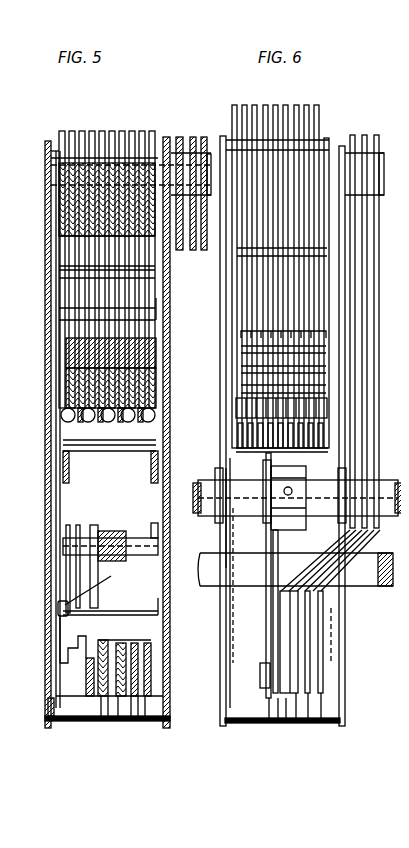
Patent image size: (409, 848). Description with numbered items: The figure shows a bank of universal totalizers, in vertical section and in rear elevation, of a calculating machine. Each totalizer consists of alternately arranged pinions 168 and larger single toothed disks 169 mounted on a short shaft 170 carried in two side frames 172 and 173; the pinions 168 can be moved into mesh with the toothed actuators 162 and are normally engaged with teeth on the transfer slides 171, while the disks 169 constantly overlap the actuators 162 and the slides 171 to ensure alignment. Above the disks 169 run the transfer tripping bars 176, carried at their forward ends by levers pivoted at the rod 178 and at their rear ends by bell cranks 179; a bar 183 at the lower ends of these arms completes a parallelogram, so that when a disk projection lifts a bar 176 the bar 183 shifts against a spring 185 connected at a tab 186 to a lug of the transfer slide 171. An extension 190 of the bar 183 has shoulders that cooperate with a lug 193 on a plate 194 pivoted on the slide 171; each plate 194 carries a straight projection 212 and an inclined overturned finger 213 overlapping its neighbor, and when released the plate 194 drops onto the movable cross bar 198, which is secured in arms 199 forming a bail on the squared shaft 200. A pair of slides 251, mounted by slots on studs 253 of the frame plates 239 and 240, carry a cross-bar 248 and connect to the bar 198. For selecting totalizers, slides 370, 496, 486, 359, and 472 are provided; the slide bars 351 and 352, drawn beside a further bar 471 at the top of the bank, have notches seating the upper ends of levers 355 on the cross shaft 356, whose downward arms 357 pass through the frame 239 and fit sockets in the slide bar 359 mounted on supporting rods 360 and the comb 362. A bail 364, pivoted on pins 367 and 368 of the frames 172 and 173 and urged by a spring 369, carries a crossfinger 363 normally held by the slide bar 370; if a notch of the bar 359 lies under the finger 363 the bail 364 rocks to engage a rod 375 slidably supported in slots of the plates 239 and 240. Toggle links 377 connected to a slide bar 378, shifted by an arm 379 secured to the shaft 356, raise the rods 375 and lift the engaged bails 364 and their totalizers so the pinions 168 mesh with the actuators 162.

In FIG. 5, the actuators 162 is at (136, 123).
In FIG. 6, the actuators 162 is at (303, 130).
In FIG. 5, the jack 471 is at (171, 128).
In FIG. 6, the jack 471 is at (357, 127).
In FIG. 5, the slide bar 351 is at (185, 128).
In FIG. 6, the slide bar 351 is at (345, 127).
In FIG. 5, the slide bar 352 is at (196, 128).
In FIG. 6, the slide bar 352 is at (367, 126).
In FIG. 5, the pivot rod 178 is at (45, 180).
In FIG. 5, the transfer tripping bars 176 is at (54, 209).
In FIG. 5, the single toothed disks 169 is at (60, 263).
In FIG. 5, the pinions 168 is at (53, 273).
In FIG. 5, the side frame 173 is at (47, 383).
In FIG. 5, the spring 185 is at (55, 409).
In FIG. 5, the tab 186 is at (55, 433).
In FIG. 5, the short shaft 170 is at (150, 302).
In FIG. 5, the transfer slides 171 is at (143, 350).
In FIG. 5, the bar 183 is at (137, 383).
In FIG. 5, the side frame 172 is at (153, 405).
In FIG. 5, the spacing plate 240 is at (40, 470).
In FIG. 6, the spacing plate 240 is at (214, 527).
In FIG. 5, the cross-bar 248 is at (85, 440).
In FIG. 5, the studs 253 is at (62, 455).
In FIG. 5, the slides 251 is at (58, 478).
In FIG. 6, the slides 251 is at (232, 470).
In FIG. 5, the rod 375 is at (130, 530).
In FIG. 5, the bail 364 is at (55, 563).
In FIG. 6, the bail 364 is at (192, 565).
In FIG. 5, the spring 369 is at (72, 573).
In FIG. 5, the toggle links 377 is at (88, 590).
In FIG. 5, the pin 368 is at (50, 602).
In FIG. 5, the crossfinger 363 is at (110, 622).
In FIG. 5, the pin 367 is at (150, 603).
In FIG. 5, the slide bar 370 is at (93, 709).
In FIG. 6, the slide bar 370 is at (267, 685).
In FIG. 5, the slide bar 378 is at (78, 689).
In FIG. 6, the slide bar 378 is at (257, 688).
In FIG. 5, the supporting rods 360 is at (50, 712).
In FIG. 5, the slide 496 is at (100, 709).
In FIG. 6, the slide 496 is at (272, 685).
In FIG. 5, the slide 486 is at (110, 709).
In FIG. 6, the slide 486 is at (278, 685).
In FIG. 5, the slide bar 359 is at (137, 709).
In FIG. 6, the slide bar 359 is at (313, 686).
In FIG. 5, the slide 472 is at (127, 709).
In FIG. 6, the slide 472 is at (300, 686).
In FIG. 6, the bell crank 179 is at (233, 288).
In FIG. 6, the lug 193 is at (238, 323).
In FIG. 6, the plate 194 is at (238, 338).
In FIG. 6, the straight projection 212 is at (240, 362).
In FIG. 6, the extension 190 is at (235, 377).
In FIG. 6, the inclined overturned finger 213 is at (233, 402).
In FIG. 6, the lever 355 is at (368, 314).
In FIG. 6, the cross shaft 356 is at (392, 470).
In FIG. 6, the cross bar 198 is at (235, 443).
In FIG. 6, the spacing plate 239 is at (213, 480).
In FIG. 6, the arm 379 is at (262, 553).
In FIG. 6, the squared shaft 200 is at (296, 569).
In FIG. 6, the arms 199 is at (224, 588).
In FIG. 6, the arm 357 is at (315, 622).
In FIG. 6, the comb 362 is at (230, 715).